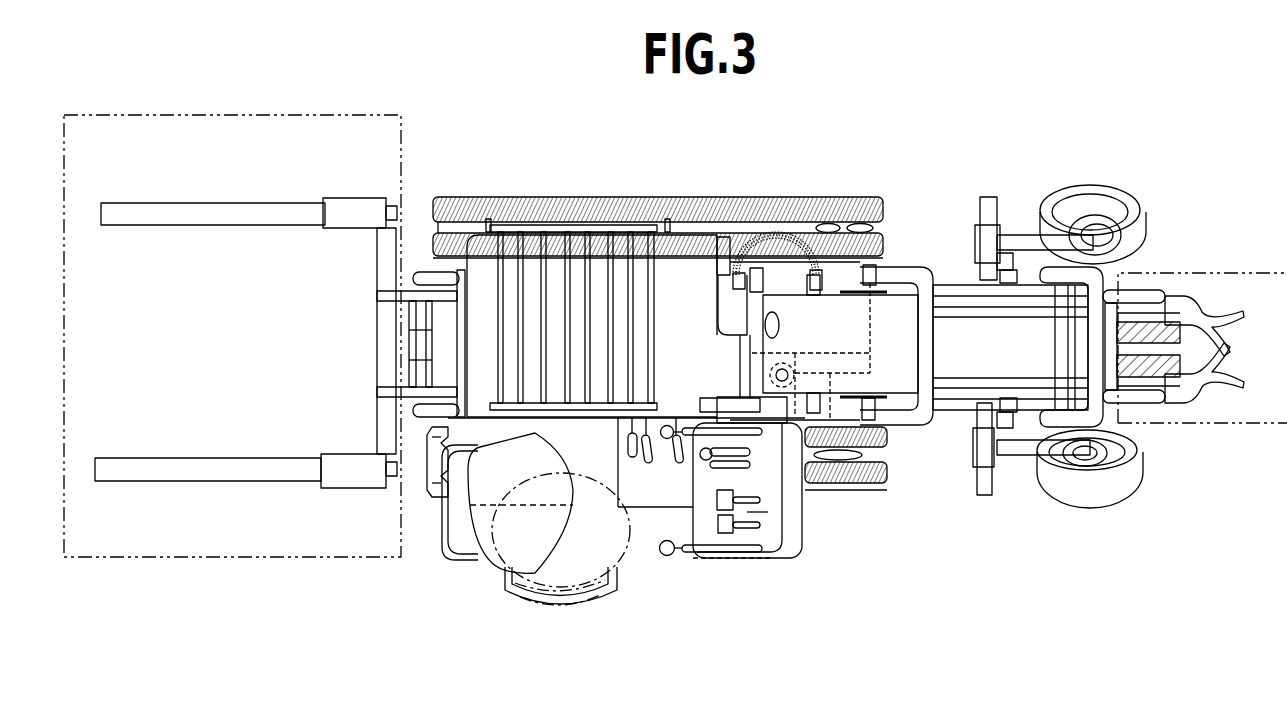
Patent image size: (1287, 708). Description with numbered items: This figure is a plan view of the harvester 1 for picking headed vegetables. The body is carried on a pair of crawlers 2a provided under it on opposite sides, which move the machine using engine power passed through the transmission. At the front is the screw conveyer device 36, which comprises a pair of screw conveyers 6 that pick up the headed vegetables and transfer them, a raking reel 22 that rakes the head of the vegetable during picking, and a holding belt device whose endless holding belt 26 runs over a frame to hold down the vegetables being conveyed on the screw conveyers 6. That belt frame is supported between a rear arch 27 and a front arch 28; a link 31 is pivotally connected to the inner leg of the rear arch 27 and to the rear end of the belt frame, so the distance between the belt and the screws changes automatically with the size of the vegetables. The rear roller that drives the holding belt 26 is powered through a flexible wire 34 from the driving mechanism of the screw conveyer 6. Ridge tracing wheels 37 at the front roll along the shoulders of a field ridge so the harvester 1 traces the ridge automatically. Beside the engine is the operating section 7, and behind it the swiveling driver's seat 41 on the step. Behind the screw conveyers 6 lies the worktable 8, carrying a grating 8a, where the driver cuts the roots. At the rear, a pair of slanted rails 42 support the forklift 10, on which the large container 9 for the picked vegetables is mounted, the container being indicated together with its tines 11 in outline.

The harvester 1 is at (845, 177).
The crawlers 2a is at (615, 208).
The screw conveyers 6 is at (1147, 327).
The operating section 7 is at (773, 552).
The worktable 8 is at (693, 255).
The grating 8a is at (552, 250).
The container 9 is at (386, 163).
The forklift 10 is at (351, 224).
The tine 11 is at (1232, 363).
The raking reel 22 is at (1203, 295).
The holding belt 26 is at (950, 358).
The rear arch 27 is at (910, 277).
The front arch 28 is at (1082, 323).
The link 31 is at (840, 283).
The flexible wire 34 is at (780, 228).
The screw conveyer device 36 is at (1015, 193).
The ridge tracing wheel 37 is at (1083, 193).
The driver's seat 41 is at (488, 550).
The rail 42 is at (392, 294).